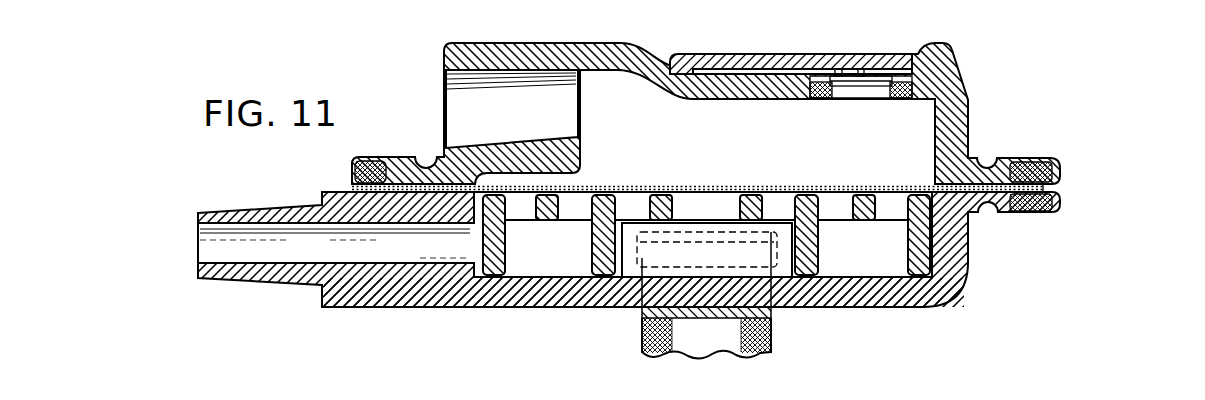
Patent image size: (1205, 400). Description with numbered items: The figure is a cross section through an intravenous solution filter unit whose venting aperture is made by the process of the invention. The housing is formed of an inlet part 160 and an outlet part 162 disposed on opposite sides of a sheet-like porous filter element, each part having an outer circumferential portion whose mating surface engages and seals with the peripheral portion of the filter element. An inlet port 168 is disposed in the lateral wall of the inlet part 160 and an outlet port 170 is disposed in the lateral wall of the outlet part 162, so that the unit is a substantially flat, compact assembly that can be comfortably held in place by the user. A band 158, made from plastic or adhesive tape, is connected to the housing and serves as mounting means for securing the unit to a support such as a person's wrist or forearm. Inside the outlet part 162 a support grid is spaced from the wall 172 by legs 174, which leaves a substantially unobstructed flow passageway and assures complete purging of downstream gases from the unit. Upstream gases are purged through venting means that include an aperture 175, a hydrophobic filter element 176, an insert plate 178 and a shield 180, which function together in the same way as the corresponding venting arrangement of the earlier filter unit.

The band 158 is at (723, 349).
The inlet part 160 is at (965, 80).
The outlet part 162 is at (975, 273).
The inlet port 168 is at (513, 122).
The outlet port 170 is at (342, 257).
The wall 172 is at (820, 292).
The legs 174 is at (594, 256).
The aperture 175 is at (880, 68).
The hydrophobic filter element 176 is at (860, 100).
The insert plate 178 is at (822, 100).
The shield 180 is at (754, 54).